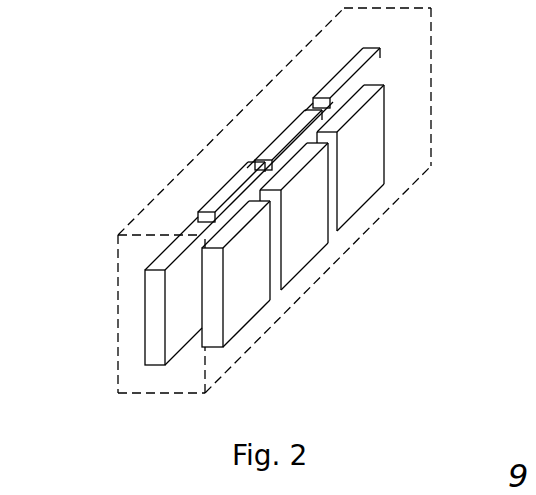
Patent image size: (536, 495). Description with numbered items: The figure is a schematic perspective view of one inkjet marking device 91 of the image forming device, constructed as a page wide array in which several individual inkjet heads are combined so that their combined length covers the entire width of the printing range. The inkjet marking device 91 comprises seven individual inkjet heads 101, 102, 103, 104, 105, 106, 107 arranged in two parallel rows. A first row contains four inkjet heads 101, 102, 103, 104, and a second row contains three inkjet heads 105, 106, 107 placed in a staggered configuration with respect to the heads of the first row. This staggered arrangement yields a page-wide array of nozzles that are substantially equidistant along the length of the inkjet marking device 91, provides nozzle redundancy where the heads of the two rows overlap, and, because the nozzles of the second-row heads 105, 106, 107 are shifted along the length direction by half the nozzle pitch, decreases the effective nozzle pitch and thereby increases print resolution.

The inkjet marking device 91 is at (434, 59).
The inkjet head 101 is at (163, 252).
The inkjet head 102 is at (222, 195).
The inkjet head 103 is at (290, 128).
The inkjet head 104 is at (346, 63).
The inkjet head 105 is at (268, 307).
The inkjet head 106 is at (310, 213).
The inkjet head 107 is at (360, 154).